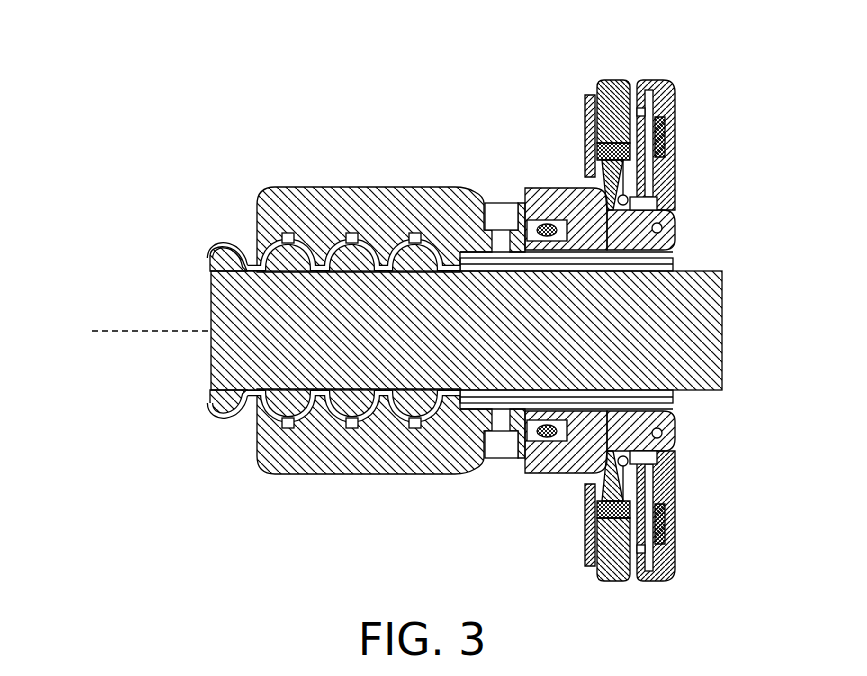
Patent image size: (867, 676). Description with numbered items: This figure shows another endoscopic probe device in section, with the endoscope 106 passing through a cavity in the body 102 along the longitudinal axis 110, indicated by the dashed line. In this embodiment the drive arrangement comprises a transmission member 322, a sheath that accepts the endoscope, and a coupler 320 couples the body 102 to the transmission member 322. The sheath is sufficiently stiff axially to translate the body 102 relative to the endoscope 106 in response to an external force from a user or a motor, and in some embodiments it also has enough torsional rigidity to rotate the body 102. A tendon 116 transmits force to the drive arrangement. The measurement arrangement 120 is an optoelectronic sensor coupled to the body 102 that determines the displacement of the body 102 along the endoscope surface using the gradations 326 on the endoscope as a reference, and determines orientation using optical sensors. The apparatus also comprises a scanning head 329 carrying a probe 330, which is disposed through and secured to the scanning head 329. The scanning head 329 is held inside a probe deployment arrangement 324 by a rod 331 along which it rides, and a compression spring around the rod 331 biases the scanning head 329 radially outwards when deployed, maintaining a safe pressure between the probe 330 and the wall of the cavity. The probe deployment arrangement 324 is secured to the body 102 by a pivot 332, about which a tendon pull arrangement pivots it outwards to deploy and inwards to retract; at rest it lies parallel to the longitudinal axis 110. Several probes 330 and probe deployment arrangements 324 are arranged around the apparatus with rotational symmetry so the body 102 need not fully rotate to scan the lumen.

The endoscope 106 is at (688, 325).
The longitudinal axis 110 is at (126, 334).
The body 102 is at (534, 192).
The tendon 116 is at (509, 412).
The measurement arrangement 120 is at (516, 418).
The coupler 320 is at (324, 192).
The transmission member 322 is at (214, 260).
The gradations 326 is at (240, 386).
The scanning head 329 is at (674, 129).
The probe deployment arrangement 324 is at (672, 185).
The probe 330 is at (615, 70).
The rod 331 is at (672, 84).
The pivot 332 is at (670, 229).